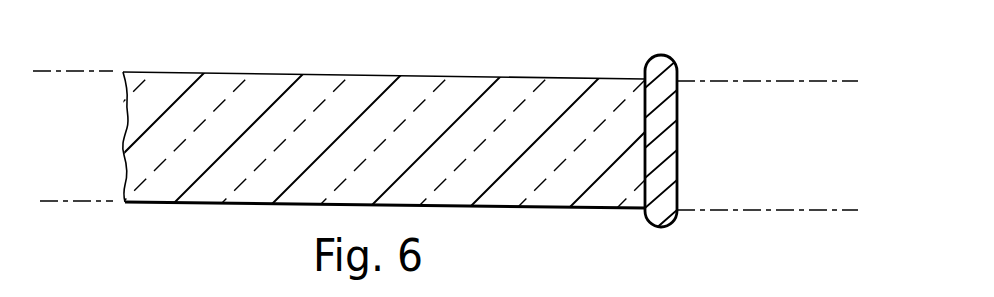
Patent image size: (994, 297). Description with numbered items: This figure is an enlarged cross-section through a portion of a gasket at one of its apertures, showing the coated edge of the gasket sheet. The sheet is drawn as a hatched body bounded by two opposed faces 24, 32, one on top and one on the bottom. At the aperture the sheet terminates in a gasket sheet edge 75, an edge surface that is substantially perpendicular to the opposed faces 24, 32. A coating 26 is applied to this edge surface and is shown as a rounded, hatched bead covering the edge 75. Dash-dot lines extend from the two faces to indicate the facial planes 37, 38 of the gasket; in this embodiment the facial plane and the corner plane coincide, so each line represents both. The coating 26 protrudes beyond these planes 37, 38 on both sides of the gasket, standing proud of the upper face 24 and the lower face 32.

The opposed face 24 is at (425, 76).
The coating 26 is at (677, 110).
The opposed face 32 is at (240, 205).
The facial plane 37 is at (843, 82).
The facial plane 38 is at (796, 211).
The gasket sheet edge 75 is at (643, 117).